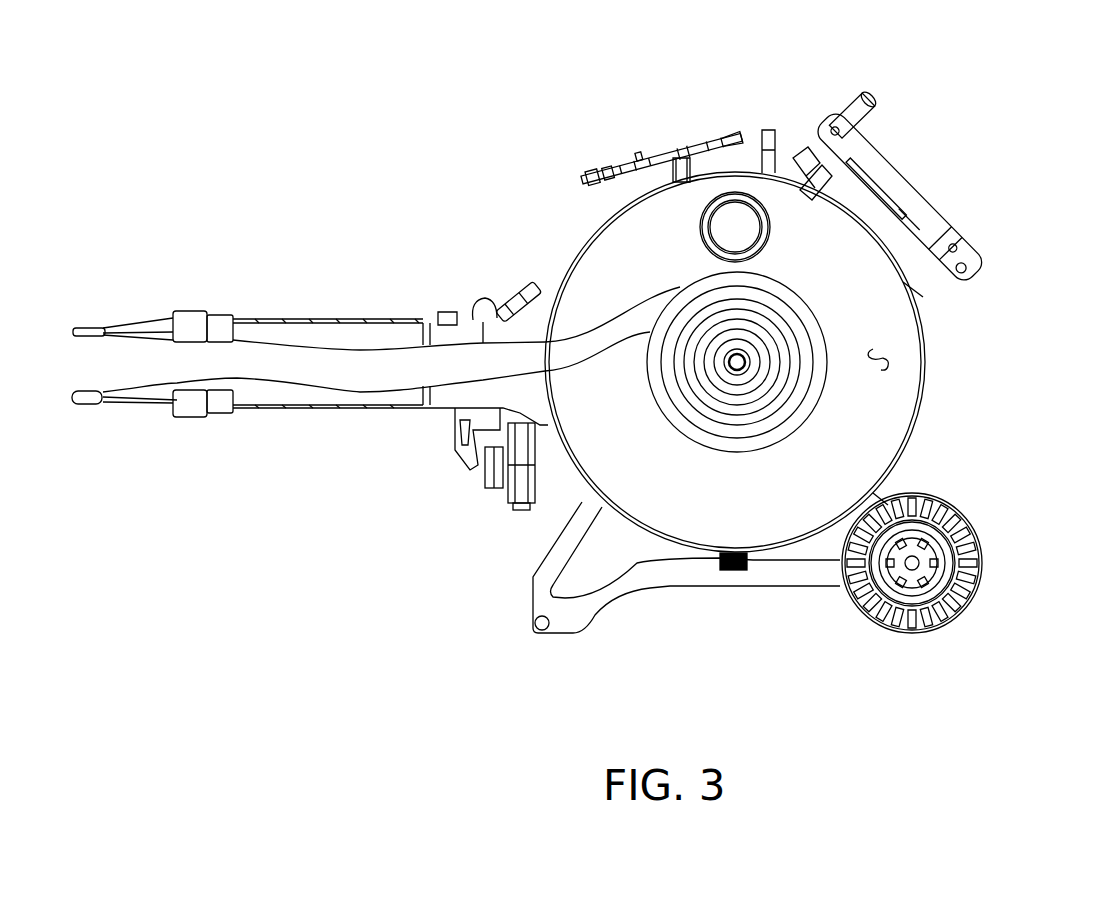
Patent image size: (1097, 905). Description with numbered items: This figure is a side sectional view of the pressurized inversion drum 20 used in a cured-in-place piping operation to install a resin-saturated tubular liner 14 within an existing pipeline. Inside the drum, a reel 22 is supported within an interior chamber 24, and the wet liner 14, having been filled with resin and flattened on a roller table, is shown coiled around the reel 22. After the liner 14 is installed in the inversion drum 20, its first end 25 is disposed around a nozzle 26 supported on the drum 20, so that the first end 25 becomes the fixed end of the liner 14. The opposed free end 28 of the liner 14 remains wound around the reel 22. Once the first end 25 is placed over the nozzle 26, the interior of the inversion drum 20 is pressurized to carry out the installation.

The inversion drum 20 is at (775, 98).
The liner 14 is at (408, 345).
The reel 22 is at (742, 366).
The interior chamber 24 is at (884, 357).
The first end 25 is at (85, 404).
The nozzle 26 is at (140, 322).
The free end 28 is at (740, 360).